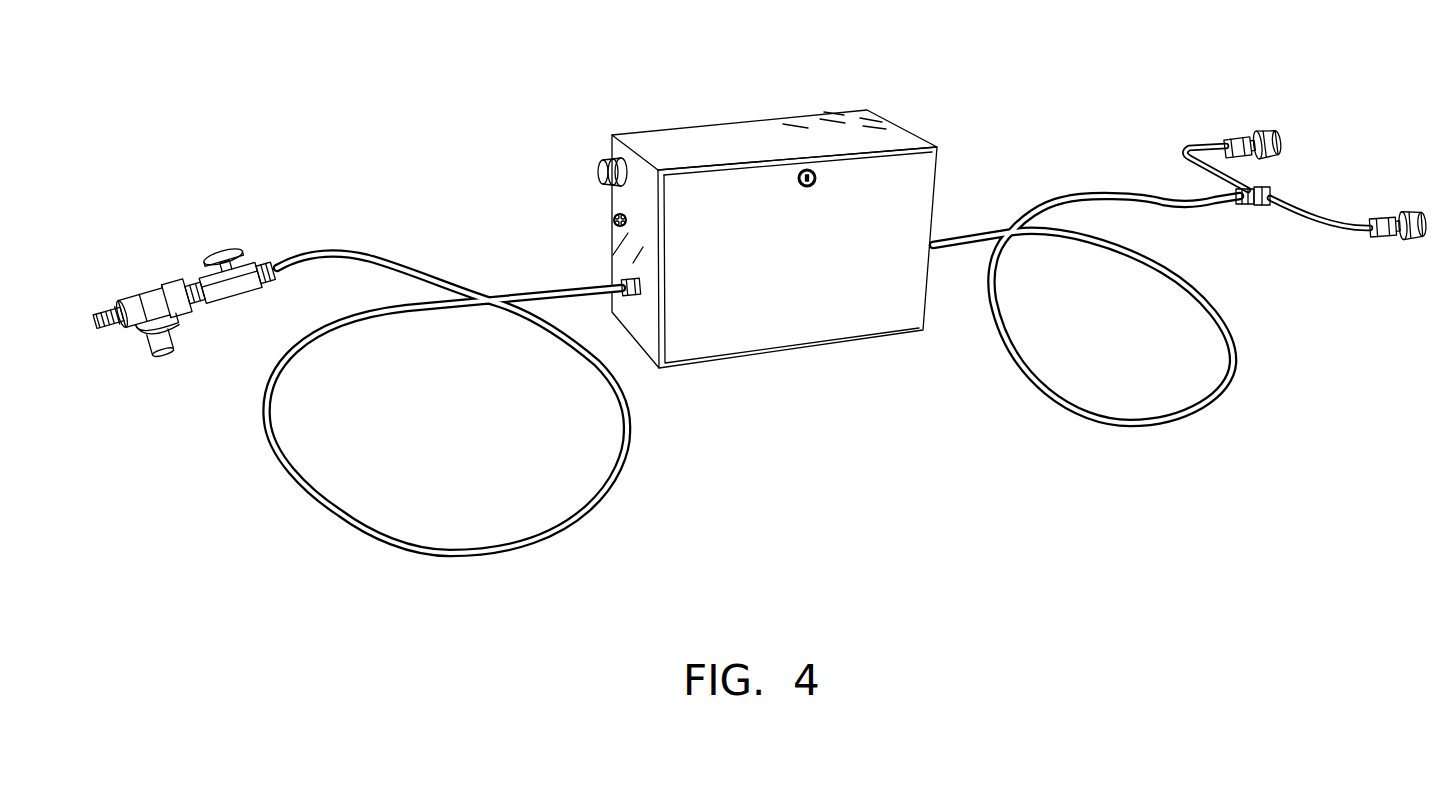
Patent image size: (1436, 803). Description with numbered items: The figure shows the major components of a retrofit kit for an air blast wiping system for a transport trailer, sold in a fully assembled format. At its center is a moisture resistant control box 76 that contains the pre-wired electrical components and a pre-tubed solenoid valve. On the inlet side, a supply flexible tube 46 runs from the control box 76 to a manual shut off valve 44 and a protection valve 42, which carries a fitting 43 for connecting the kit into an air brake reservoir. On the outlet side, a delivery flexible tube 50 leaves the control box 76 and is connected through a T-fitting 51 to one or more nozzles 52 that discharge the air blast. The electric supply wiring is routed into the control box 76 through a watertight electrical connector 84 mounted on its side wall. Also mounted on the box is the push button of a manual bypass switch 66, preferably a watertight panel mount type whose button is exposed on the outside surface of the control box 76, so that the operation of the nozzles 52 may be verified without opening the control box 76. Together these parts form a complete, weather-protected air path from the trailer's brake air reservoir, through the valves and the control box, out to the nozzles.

The protection valve 42 is at (157, 297).
The fitting 43 is at (103, 316).
The manual shut off valve 44 is at (225, 250).
The supply flexible tube 46 is at (390, 263).
The delivery flexible tube 50 is at (1220, 315).
The T-fitting 51 is at (1253, 187).
The nozzles 52 is at (1253, 130).
The manual bypass switch 66 is at (600, 170).
The control box 76 is at (897, 127).
The watertight electrical connector 84 is at (610, 223).